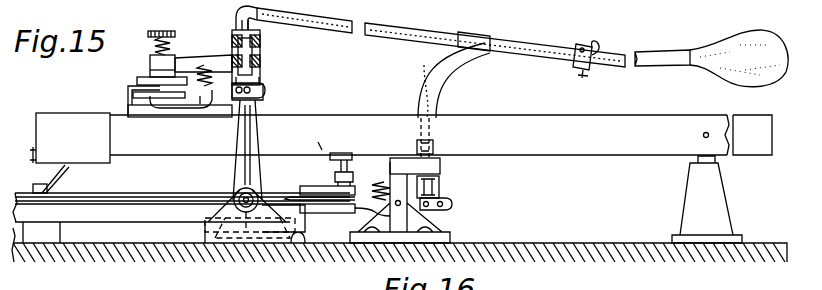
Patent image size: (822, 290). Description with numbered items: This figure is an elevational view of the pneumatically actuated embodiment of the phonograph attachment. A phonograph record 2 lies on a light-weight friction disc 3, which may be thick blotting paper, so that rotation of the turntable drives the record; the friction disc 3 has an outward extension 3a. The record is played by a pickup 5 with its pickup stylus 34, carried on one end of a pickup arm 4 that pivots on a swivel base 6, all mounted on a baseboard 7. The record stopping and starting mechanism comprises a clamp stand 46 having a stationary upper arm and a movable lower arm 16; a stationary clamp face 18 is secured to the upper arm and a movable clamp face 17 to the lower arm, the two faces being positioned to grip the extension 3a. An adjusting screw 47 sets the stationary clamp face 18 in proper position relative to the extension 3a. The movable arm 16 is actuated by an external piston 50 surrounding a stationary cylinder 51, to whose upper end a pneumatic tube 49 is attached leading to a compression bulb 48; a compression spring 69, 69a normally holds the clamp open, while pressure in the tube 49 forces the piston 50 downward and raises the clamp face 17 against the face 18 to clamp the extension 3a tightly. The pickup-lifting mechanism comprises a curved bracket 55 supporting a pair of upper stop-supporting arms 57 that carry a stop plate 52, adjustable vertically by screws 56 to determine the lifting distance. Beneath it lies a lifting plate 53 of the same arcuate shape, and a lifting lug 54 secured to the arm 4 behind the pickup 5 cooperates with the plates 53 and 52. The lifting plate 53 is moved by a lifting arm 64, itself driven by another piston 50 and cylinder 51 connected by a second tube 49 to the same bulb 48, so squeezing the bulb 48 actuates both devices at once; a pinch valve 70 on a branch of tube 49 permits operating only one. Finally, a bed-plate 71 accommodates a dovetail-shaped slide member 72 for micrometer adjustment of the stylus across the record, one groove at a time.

The phonograph record 2 is at (122, 193).
The friction disc 3 is at (84, 202).
The extension of friction disc 3a is at (310, 196).
The pickup arm 4 is at (558, 122).
The pickup 5 is at (80, 120).
The swivel base 6 is at (690, 194).
The baseboard 7 is at (585, 242).
The movable lower arm 16 is at (420, 205).
The movable clamp face 17 is at (336, 214).
The stationary clamp face 18 is at (322, 196).
The pickup stylus 34 is at (44, 178).
The clamp stand 46 is at (402, 158).
The adjusting screw 47 is at (320, 142).
The compression bulb 48 is at (735, 46).
The pneumatic tube 49 is at (438, 62).
The external piston 50 is at (442, 196).
The stationary cylinder 51 is at (440, 178).
The stop plate 52 is at (147, 80).
The lifting plate 53 is at (130, 97).
The lifting lug 54 is at (132, 86).
The curved bracket 55 is at (240, 170).
The screws 56 is at (168, 30).
The upper stop-supporting arms 57 is at (184, 55).
The lifting arm 64 is at (192, 110).
The compression spring 69 is at (205, 64).
The compression spring 69a is at (365, 180).
The pinch valve 70 is at (589, 40).
The bed-plate 71 is at (212, 214).
The slide member 72 is at (266, 240).